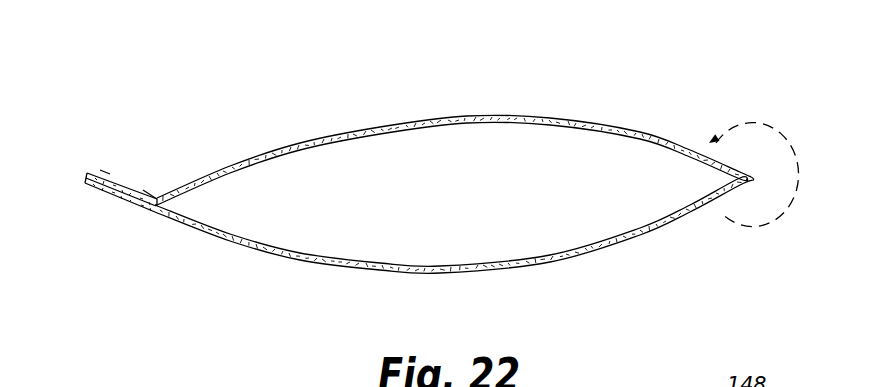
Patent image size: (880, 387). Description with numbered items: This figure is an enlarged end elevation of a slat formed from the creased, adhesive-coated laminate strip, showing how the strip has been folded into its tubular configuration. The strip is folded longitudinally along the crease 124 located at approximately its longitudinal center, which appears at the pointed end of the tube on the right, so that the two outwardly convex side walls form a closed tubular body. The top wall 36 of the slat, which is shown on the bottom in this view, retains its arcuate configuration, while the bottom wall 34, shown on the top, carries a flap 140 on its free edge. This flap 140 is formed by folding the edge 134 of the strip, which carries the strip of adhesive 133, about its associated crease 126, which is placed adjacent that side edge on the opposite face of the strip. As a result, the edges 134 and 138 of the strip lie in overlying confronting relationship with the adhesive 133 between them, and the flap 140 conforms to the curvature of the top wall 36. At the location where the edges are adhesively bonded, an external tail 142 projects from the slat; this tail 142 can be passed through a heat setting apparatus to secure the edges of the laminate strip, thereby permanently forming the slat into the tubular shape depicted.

The bottom wall 34 is at (288, 258).
The top wall 36 is at (448, 117).
The crease 124 is at (740, 182).
The crease 126 is at (160, 197).
The strip of adhesive 133 is at (118, 203).
The right edge of the strip 134 is at (87, 173).
The edge of the strip 138 is at (85, 183).
The flap 140 is at (143, 190).
The external tail 142 is at (106, 150).